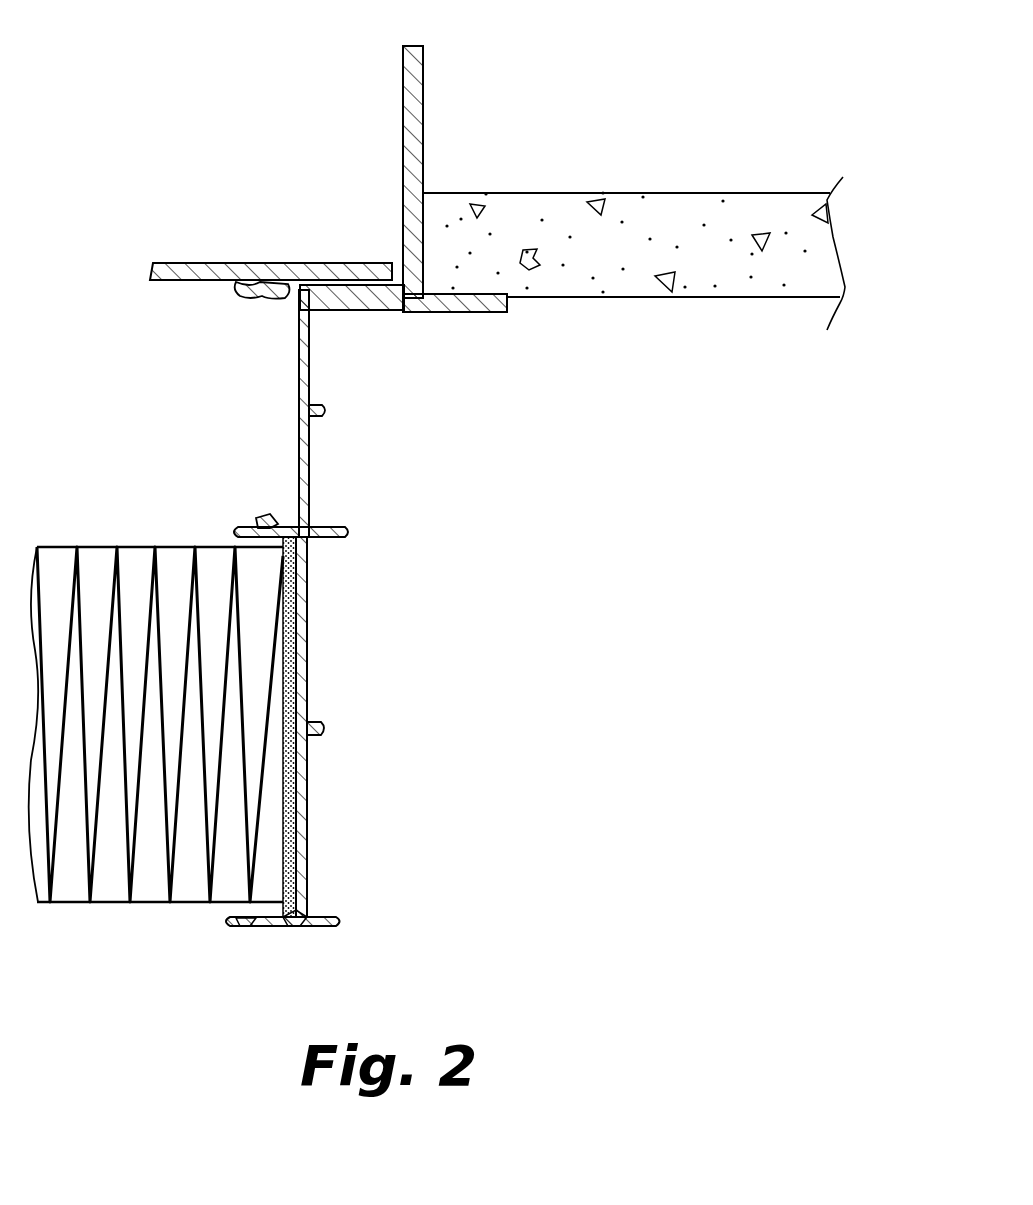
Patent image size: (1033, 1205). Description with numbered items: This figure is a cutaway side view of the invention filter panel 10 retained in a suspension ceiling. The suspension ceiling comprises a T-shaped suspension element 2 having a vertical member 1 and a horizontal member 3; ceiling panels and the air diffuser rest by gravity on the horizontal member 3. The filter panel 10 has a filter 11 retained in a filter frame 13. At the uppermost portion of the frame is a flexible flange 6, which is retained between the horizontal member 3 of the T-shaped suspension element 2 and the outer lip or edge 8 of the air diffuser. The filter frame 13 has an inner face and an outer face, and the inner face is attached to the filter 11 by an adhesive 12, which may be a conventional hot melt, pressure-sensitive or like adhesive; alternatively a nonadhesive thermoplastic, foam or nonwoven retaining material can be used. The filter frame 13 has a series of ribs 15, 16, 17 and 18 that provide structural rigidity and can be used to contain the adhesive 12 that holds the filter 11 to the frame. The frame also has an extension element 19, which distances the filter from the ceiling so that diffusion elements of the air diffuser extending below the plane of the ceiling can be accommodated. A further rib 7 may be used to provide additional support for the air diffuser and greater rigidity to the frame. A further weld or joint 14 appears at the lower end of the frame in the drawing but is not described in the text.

The vertical member 1 is at (425, 63).
The T-shaped suspension element 2 is at (412, 138).
The horizontal member 3 is at (475, 313).
The flexible flange 6 is at (345, 303).
The rib 7 is at (268, 297).
The outer lip or edge 8 is at (306, 264).
The filter panel 10 is at (311, 465).
The filter 11 is at (70, 893).
The adhesive 12 is at (300, 681).
The filter frame 13 is at (306, 777).
The weld 14 is at (296, 927).
The rib 15 is at (327, 915).
The rib 16 is at (346, 530).
The rib 17 is at (260, 522).
The rib 18 is at (245, 927).
The extension element 19 is at (302, 397).